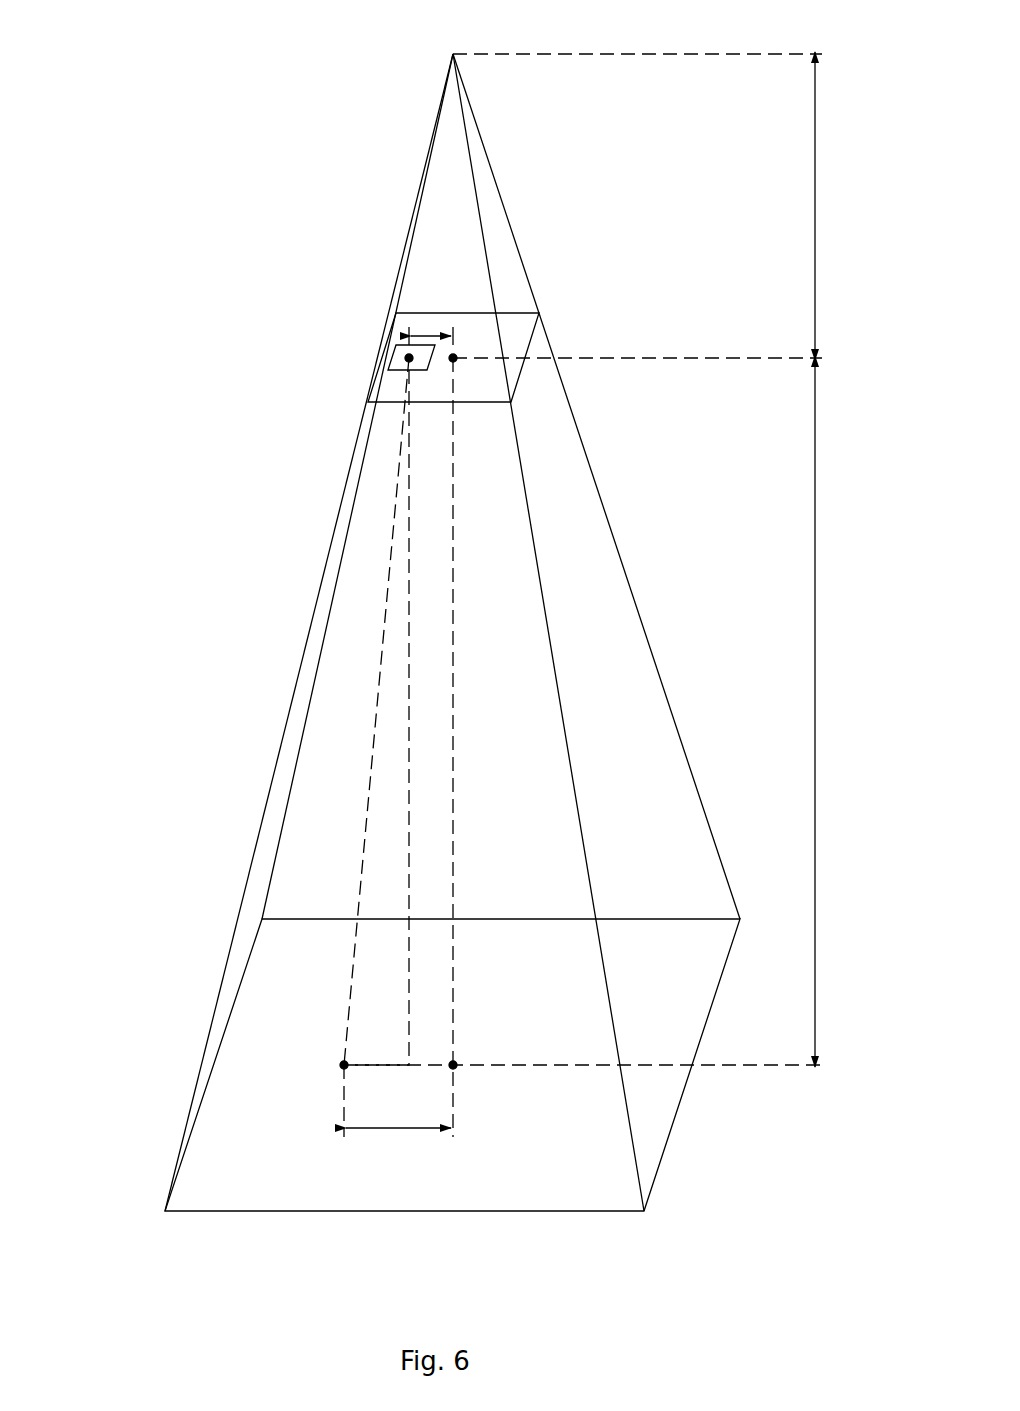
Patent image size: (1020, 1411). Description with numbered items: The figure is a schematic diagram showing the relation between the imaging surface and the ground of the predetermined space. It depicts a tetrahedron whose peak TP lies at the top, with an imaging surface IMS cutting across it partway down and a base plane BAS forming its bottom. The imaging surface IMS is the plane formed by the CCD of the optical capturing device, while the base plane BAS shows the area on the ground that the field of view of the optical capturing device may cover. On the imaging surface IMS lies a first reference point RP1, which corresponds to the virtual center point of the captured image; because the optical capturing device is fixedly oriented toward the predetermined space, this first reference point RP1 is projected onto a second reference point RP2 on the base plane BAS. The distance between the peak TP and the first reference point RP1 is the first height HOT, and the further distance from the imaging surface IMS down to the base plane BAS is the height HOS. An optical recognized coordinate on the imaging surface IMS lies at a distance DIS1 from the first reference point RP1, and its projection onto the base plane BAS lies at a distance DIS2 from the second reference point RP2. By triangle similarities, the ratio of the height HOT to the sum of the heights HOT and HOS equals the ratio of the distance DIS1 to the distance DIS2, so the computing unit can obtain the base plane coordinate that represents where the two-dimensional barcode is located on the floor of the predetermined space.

The peak of the tetrahedron TP is at (448, 47).
The imaging surface IMS is at (543, 281).
The first reference point RP1 is at (460, 352).
The distance DIS1 is at (430, 333).
The first height HOT is at (849, 206).
The height HOS is at (850, 711).
The second reference point RP2 is at (457, 1060).
The distance DIS2 is at (398, 1146).
The base plane BAS is at (700, 1124).